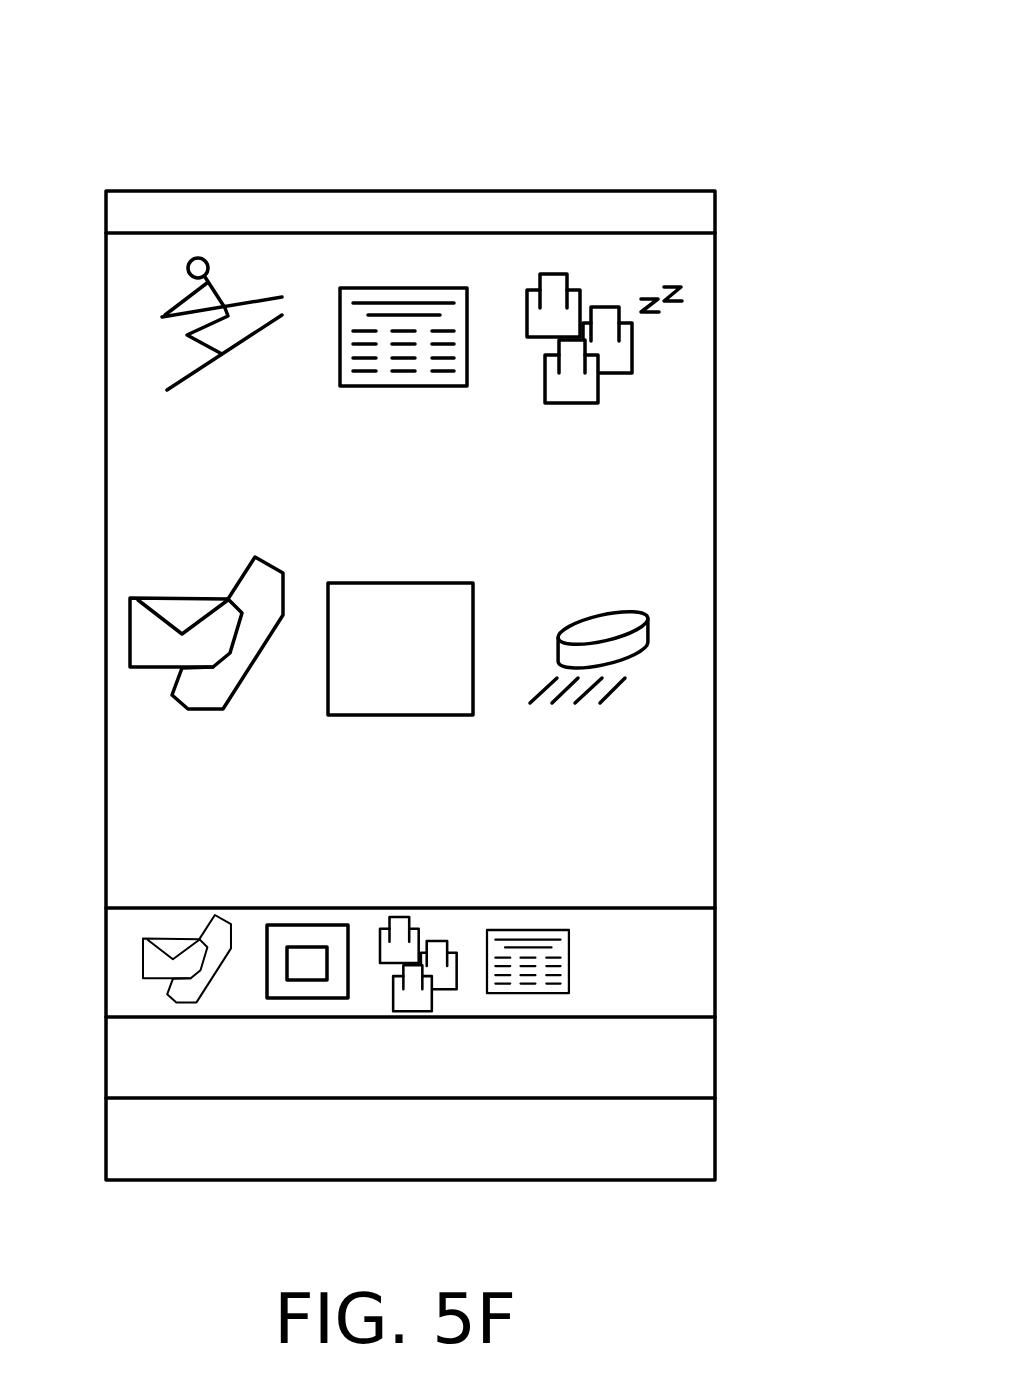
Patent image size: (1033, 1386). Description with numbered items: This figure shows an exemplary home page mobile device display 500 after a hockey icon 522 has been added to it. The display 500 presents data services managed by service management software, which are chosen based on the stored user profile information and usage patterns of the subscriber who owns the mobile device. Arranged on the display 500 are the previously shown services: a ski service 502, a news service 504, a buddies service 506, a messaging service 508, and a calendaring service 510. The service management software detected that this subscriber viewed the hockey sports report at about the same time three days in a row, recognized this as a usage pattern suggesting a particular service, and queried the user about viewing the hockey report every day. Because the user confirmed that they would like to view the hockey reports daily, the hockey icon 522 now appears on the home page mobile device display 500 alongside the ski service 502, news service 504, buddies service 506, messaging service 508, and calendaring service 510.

The home page mobile device display 500 is at (222, 78).
The ski service 502 is at (224, 474).
The news service 504 is at (413, 474).
The buddies service 506 is at (597, 474).
The messaging service 508 is at (190, 809).
The calendaring service 510 is at (405, 807).
The hockey icon 522 is at (683, 616).